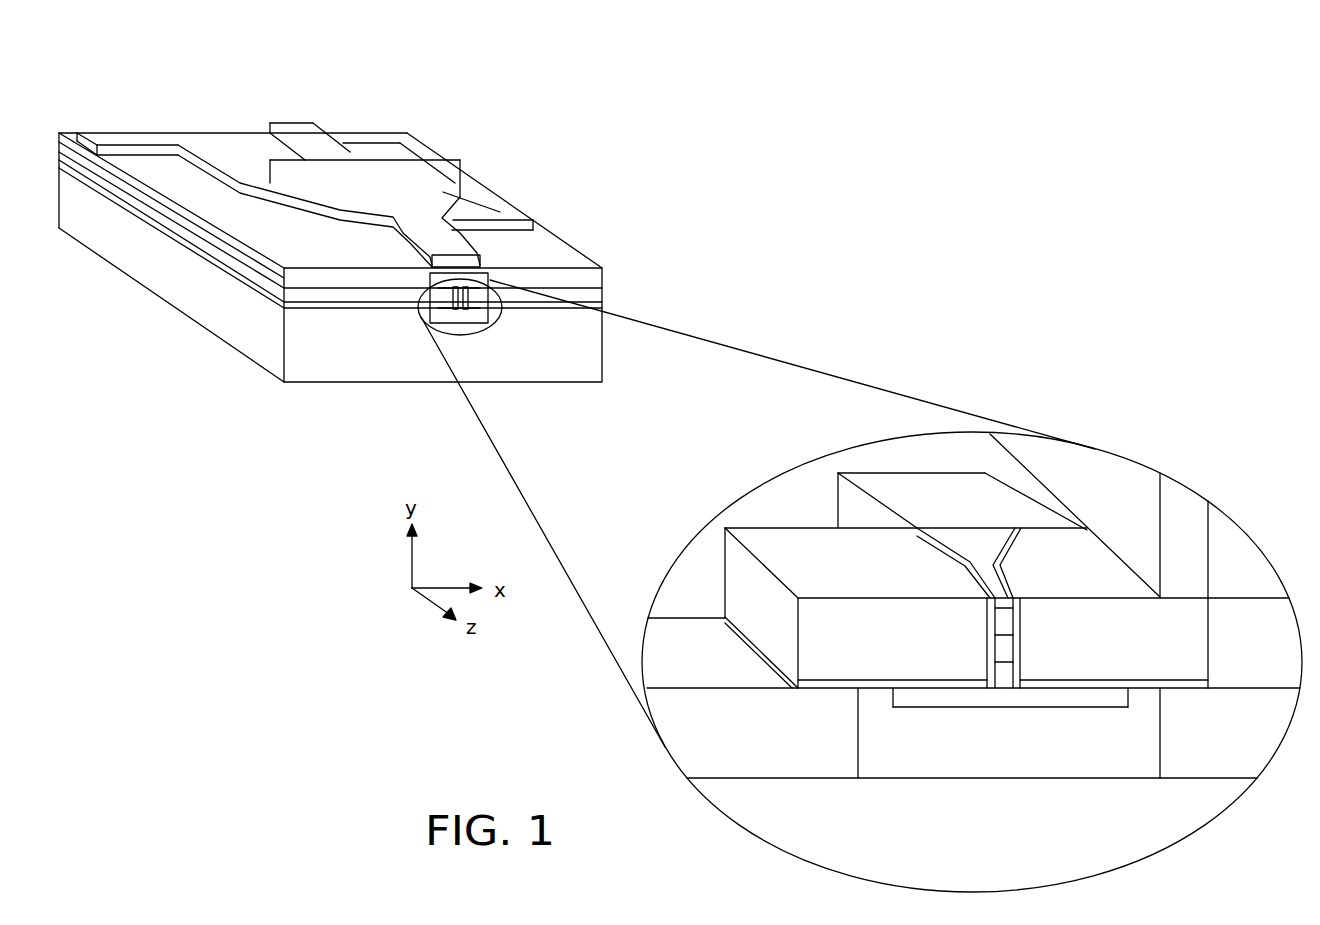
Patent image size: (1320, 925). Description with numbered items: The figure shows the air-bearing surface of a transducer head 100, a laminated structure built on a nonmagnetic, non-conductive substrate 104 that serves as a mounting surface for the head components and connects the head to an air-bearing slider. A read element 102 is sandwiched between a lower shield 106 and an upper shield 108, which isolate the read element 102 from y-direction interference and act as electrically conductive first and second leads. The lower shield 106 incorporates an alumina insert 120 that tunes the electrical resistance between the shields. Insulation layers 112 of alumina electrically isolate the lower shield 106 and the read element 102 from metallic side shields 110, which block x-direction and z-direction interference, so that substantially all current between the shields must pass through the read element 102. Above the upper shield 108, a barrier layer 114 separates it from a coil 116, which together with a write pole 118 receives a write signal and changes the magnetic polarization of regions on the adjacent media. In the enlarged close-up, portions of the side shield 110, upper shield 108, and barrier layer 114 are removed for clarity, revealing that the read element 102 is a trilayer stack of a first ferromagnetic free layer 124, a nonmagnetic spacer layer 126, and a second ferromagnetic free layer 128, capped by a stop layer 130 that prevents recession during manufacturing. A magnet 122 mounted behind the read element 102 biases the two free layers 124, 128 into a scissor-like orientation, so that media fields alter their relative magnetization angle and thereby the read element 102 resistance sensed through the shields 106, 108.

The transducer head 100 is at (198, 84).
The read element 102 is at (420, 300).
The substrate 104 is at (579, 365).
The lower shield 106 is at (500, 317).
The upper shield 108 is at (490, 277).
The side shields 110 is at (602, 298).
The insulation layers 112 is at (602, 306).
The barrier layer 114 is at (602, 269).
The coil 116 is at (505, 190).
The write pole 118 is at (423, 201).
The alumina insert 120 is at (467, 313).
The magnet 122 is at (958, 509).
The first ferromagnetic free layer 124 is at (1025, 680).
The nonmagnetic spacer layer 126 is at (1022, 645).
The second ferromagnetic free layer 128 is at (1025, 606).
The stop layer 130 is at (1013, 566).